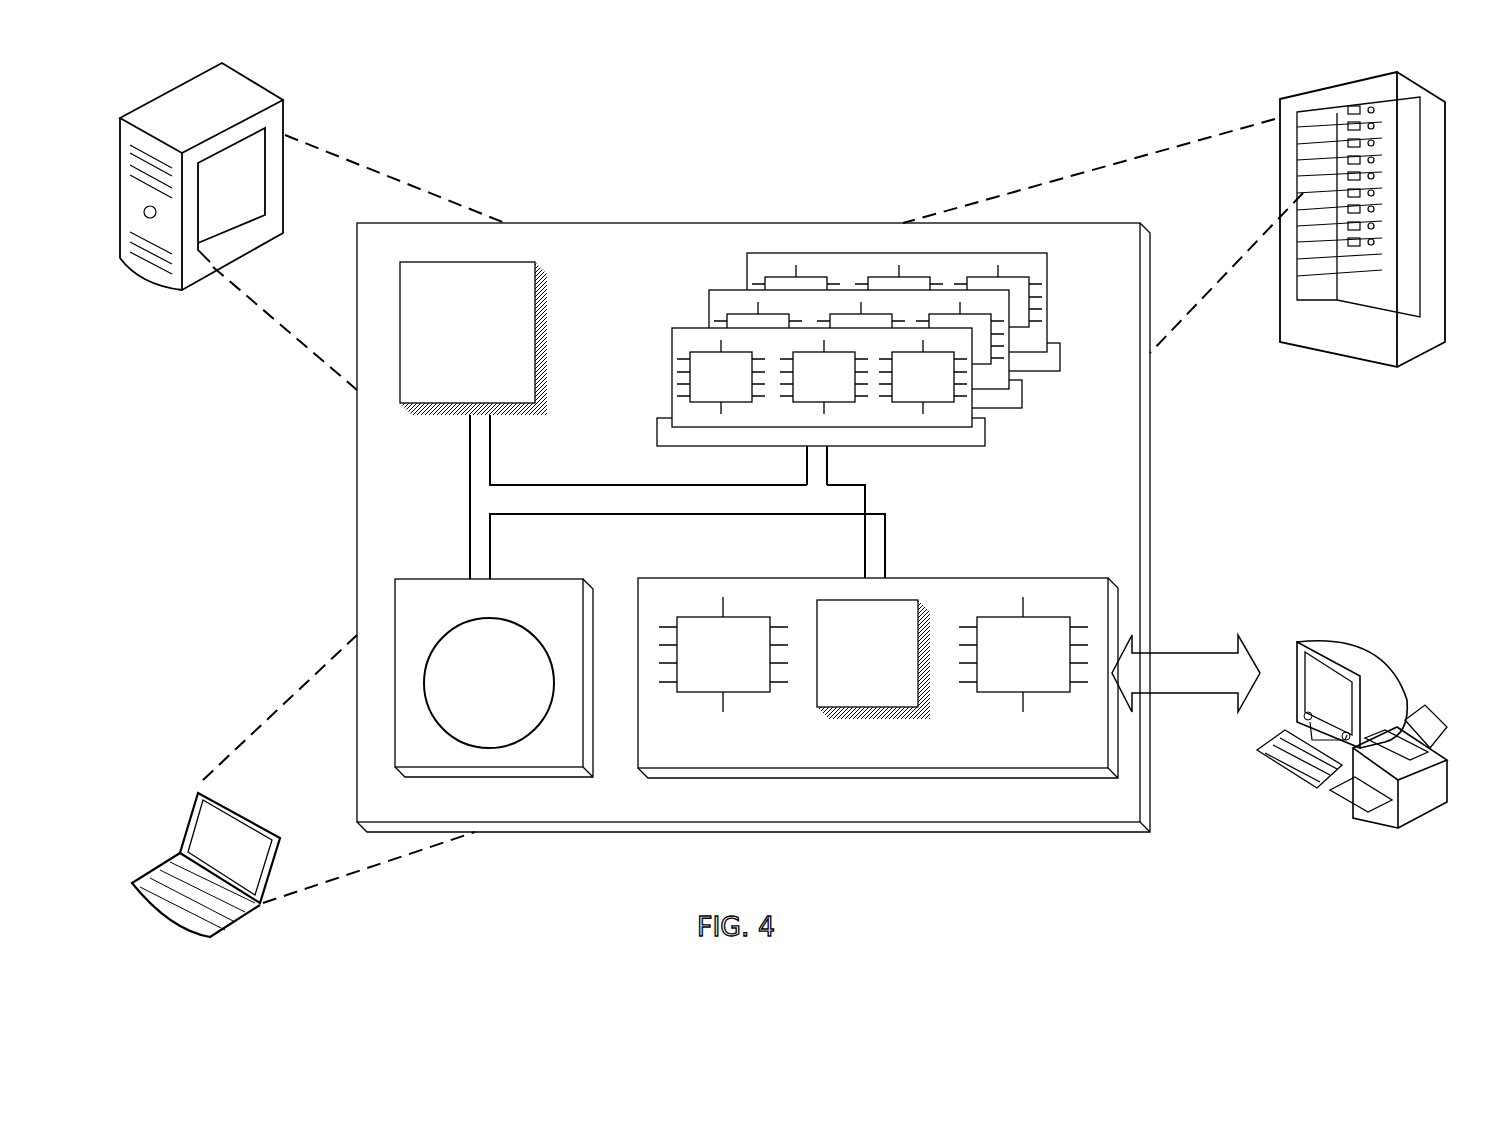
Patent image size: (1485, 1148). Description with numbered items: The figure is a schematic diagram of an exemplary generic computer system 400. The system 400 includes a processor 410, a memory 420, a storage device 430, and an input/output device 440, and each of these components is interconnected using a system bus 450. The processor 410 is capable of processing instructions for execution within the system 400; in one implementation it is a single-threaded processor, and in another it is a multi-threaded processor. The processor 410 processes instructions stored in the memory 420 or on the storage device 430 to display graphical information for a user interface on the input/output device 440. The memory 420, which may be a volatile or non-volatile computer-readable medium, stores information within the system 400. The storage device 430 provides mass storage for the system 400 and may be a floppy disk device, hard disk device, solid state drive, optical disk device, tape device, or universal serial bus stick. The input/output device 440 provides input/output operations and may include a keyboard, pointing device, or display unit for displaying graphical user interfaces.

The generic computer system 400 is at (752, 81).
The processor 410 is at (522, 396).
The memory 420 is at (1052, 402).
The storage device 430 is at (568, 756).
The input/output device 440 is at (1296, 645).
The system bus 450 is at (672, 505).